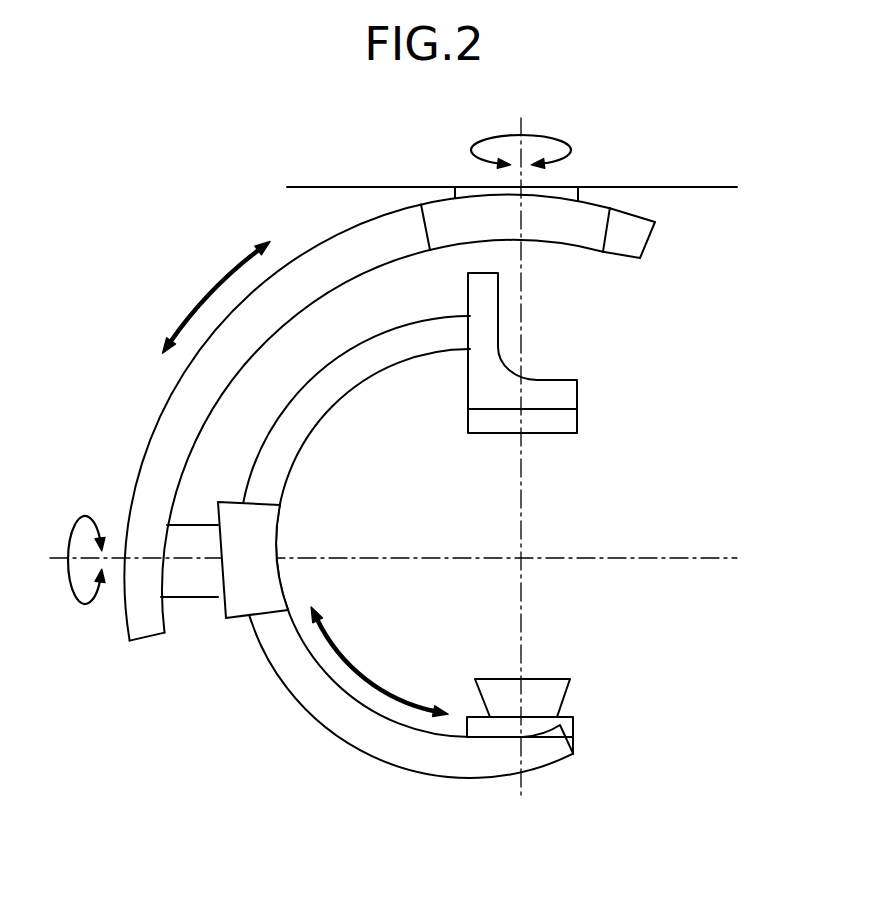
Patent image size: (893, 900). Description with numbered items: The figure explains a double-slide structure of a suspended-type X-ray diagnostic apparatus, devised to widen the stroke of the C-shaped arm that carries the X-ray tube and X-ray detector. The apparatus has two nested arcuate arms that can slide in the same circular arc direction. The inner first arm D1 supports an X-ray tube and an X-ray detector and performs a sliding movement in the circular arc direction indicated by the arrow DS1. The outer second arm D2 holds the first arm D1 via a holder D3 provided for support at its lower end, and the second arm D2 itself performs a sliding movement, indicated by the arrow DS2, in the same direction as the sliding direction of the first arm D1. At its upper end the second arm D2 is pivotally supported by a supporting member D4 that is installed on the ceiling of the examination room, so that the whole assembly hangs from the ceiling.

The first arm D1 is at (340, 733).
The second arm D2 is at (175, 380).
The holder D3 is at (197, 598).
The supporting member D4 is at (580, 192).
The arrow indicating sliding direction of first arm DS1 is at (385, 698).
The arrow indicating sliding direction of second arm DS2 is at (200, 302).